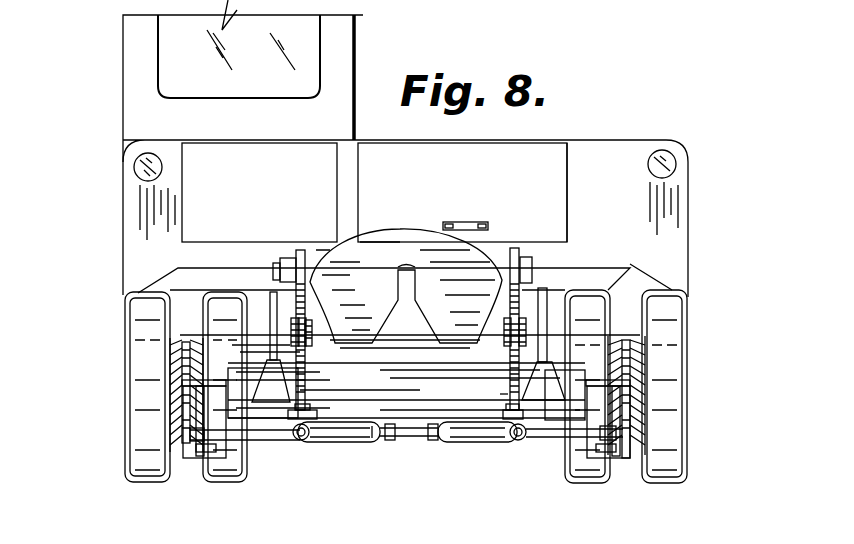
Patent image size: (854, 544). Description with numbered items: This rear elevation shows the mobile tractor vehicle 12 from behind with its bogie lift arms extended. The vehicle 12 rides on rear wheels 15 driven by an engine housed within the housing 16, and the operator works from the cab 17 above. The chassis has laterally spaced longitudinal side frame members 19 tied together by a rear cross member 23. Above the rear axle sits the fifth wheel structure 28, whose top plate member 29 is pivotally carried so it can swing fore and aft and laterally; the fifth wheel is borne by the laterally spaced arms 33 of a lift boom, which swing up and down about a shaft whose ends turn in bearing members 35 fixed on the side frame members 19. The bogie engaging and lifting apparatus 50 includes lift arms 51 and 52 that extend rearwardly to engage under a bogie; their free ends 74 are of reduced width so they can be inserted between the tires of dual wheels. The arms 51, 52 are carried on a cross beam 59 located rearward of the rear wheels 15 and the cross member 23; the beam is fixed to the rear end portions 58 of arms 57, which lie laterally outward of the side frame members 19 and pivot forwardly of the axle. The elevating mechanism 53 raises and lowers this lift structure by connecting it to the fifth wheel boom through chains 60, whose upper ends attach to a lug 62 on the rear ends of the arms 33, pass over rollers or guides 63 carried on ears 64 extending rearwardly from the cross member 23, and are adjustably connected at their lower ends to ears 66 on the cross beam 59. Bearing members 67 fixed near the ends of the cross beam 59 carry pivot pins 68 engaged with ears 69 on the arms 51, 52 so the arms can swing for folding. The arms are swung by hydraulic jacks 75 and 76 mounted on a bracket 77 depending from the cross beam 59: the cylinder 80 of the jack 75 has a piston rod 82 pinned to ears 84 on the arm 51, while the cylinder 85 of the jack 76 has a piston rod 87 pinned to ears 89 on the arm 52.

The mobile tractor vehicle 12 is at (123, 128).
The rear wheels 15 is at (125, 388).
The housing 16 is at (620, 140).
The cab 17 is at (123, 56).
The side frame members 19 is at (548, 295).
The rear cross member 23 is at (440, 362).
The fifth wheel structure 28 is at (383, 240).
The top plate member 29 is at (430, 236).
The arms 33 is at (299, 250).
The bearing members 35 is at (285, 258).
The bogie engaging and lifting apparatus 50 is at (484, 448).
The lift arm 51 is at (140, 450).
The lift arm 52 is at (640, 418).
The elevating mechanism 53 is at (506, 394).
The arms 57 is at (275, 265).
The rear end portions 58 is at (268, 350).
The cross beam 59 is at (386, 433).
The chains 60 is at (308, 300).
The lug 62 is at (508, 282).
The rollers or guides 63 is at (309, 320).
The ears 64 is at (312, 340).
The ears 66 is at (305, 410).
The bearing members 67 is at (226, 446).
The pivot pins 68 is at (190, 372).
The ears 69 is at (185, 390).
The free end 74 is at (188, 340).
The hydraulic jack 75 is at (358, 442).
The hydraulic jack 76 is at (472, 440).
The bracket 77 is at (416, 438).
The cylinder 80 is at (340, 438).
The piston rod 82 is at (282, 440).
The ears 84 is at (200, 448).
The cylinder 85 is at (516, 440).
The piston rod 87 is at (556, 438).
The ears 89 is at (614, 455).